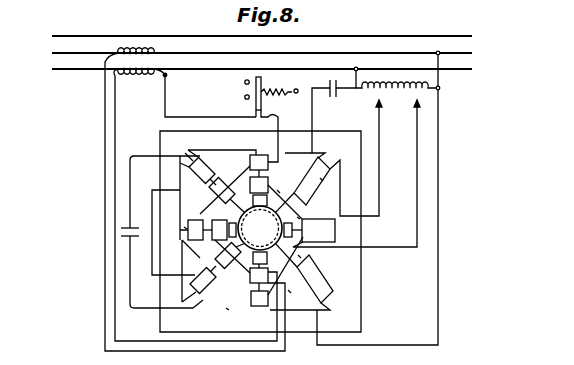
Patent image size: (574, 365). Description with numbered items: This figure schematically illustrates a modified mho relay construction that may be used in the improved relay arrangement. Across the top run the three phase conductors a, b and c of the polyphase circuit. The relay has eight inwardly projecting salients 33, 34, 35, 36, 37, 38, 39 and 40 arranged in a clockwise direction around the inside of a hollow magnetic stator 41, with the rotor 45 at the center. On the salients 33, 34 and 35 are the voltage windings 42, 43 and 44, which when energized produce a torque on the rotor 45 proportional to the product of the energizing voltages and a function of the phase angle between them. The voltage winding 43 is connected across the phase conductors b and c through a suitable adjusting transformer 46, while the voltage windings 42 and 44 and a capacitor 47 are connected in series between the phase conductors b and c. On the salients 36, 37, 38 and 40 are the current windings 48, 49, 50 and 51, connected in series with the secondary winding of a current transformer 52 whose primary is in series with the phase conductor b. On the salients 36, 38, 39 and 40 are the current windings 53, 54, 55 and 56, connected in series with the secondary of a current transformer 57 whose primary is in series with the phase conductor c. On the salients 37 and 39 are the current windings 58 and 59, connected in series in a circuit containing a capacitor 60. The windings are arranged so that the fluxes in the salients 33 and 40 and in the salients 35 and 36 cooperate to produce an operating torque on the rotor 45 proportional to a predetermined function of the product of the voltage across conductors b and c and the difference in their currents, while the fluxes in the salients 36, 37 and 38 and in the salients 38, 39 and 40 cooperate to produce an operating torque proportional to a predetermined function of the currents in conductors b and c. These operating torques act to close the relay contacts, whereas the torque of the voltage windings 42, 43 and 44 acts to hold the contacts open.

The phase conductor a is at (88, 36).
The phase conductor b is at (90, 53).
The phase conductor c is at (84, 69).
The salient 33 is at (327, 189).
The salient 34 is at (299, 218).
The salient 35 is at (299, 256).
The salient 36 is at (295, 296).
The salient 37 is at (233, 303).
The salient 38 is at (186, 227).
The salient 39 is at (218, 173).
The salient 40 is at (278, 190).
The hollow magnetic stator 41 is at (351, 124).
The voltage winding 42 is at (303, 184).
The voltage winding 43 is at (309, 230).
The voltage winding 44 is at (301, 277).
The rotor 45 is at (260, 228).
The adjusting transformer 46 is at (380, 90).
The capacitor 47 is at (335, 90).
The current winding 48 is at (241, 261).
The current winding 49 is at (230, 257).
The current winding 50 is at (225, 203).
The current winding 51 is at (276, 194).
The current transformer 52 is at (156, 50).
The current winding 53 is at (277, 271).
The current winding 54 is at (191, 198).
The current winding 55 is at (227, 195).
The current winding 56 is at (228, 160).
The current transformer 57 is at (139, 75).
The current winding 58 is at (199, 274).
The current winding 59 is at (200, 168).
The capacitor 60 is at (159, 232).